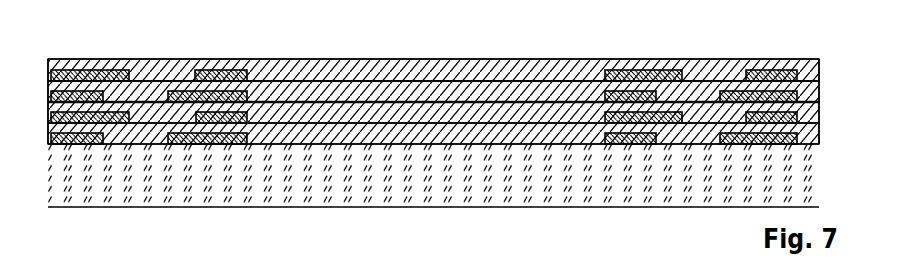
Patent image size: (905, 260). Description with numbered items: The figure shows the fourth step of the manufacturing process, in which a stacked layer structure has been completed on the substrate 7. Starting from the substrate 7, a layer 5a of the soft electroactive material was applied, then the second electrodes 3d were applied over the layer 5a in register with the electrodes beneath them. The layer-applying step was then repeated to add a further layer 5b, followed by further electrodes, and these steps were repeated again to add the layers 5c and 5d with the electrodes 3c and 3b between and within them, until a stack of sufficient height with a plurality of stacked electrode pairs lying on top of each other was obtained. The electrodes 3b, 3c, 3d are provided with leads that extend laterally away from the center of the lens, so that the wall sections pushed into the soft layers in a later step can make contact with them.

The electrode 3b is at (237, 43).
The electrode 3c is at (216, 65).
The second electrodes 3d is at (192, 80).
The layer of electroactive material 5a is at (433, 88).
The further layer of electroactive material 5b is at (433, 70).
The layer of electroactive material 5c is at (433, 59).
The layer of electroactive material 5d is at (433, 54).
The substrate 7 is at (433, 196).